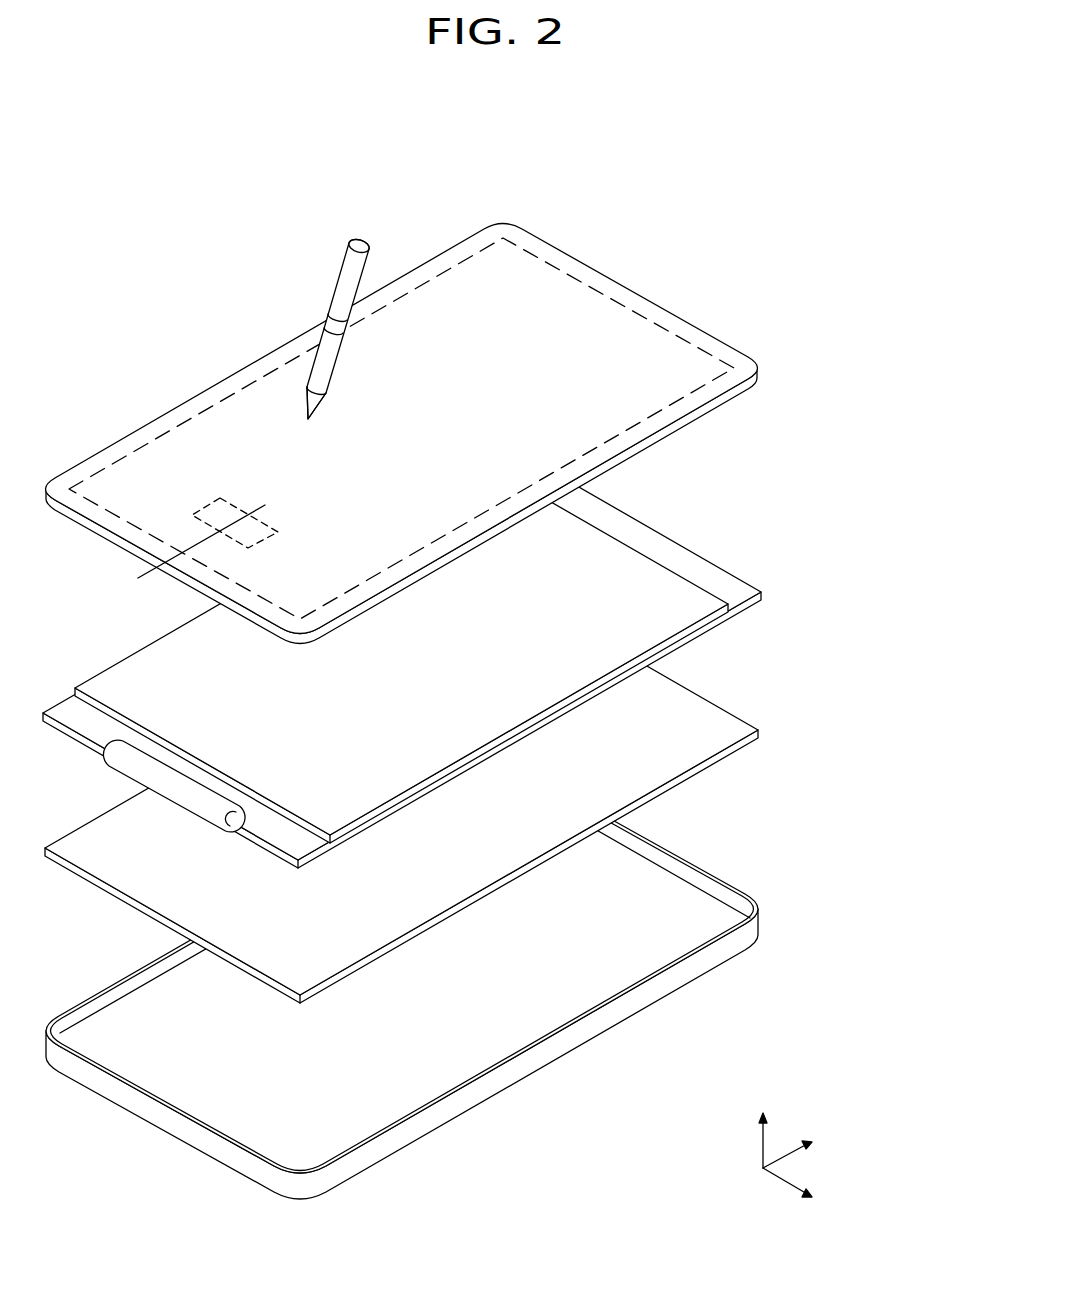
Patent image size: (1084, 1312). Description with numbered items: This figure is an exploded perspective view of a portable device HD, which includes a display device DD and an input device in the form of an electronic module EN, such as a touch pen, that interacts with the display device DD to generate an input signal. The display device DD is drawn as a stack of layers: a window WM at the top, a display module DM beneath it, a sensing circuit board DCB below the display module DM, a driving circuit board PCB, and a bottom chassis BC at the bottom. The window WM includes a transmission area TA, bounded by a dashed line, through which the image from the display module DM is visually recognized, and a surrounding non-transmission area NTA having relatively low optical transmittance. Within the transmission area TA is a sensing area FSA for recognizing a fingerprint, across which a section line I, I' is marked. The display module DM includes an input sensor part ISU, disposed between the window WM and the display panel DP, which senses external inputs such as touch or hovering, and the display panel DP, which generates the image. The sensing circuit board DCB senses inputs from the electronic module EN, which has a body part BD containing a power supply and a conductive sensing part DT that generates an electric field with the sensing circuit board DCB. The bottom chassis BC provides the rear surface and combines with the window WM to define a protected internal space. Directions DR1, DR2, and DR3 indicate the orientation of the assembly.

The portable device HD is at (502, 668).
The display device DD is at (502, 607).
The window WM is at (470, 428).
The transmission area TA is at (588, 309).
The non-transmission area NTA is at (676, 332).
The sensing area FSA is at (197, 502).
The section line I is at (193, 551).
The section line I' is at (280, 498).
The display module DM is at (470, 656).
The input sensor part ISU is at (680, 590).
The display panel DP is at (764, 597).
The sensing circuit board DCB is at (735, 727).
The driving circuit board PCB is at (133, 768).
The bottom chassis BC is at (752, 936).
The electronic module EN is at (271, 328).
The body part BD is at (345, 281).
The sensing part DT is at (325, 322).
The first direction DR1 is at (810, 1193).
The second direction DR2 is at (810, 1145).
The third direction DR3 is at (763, 1128).